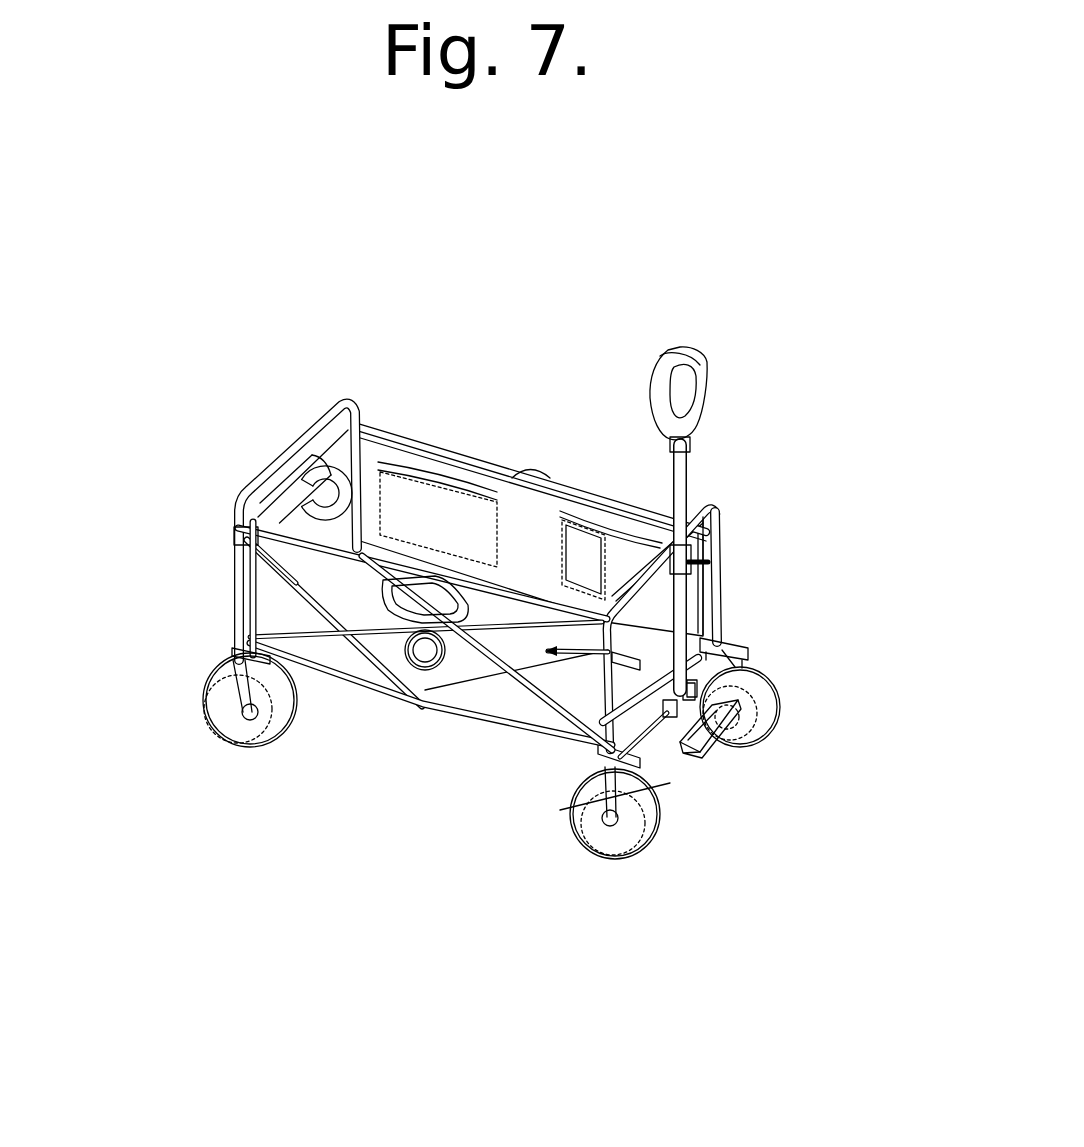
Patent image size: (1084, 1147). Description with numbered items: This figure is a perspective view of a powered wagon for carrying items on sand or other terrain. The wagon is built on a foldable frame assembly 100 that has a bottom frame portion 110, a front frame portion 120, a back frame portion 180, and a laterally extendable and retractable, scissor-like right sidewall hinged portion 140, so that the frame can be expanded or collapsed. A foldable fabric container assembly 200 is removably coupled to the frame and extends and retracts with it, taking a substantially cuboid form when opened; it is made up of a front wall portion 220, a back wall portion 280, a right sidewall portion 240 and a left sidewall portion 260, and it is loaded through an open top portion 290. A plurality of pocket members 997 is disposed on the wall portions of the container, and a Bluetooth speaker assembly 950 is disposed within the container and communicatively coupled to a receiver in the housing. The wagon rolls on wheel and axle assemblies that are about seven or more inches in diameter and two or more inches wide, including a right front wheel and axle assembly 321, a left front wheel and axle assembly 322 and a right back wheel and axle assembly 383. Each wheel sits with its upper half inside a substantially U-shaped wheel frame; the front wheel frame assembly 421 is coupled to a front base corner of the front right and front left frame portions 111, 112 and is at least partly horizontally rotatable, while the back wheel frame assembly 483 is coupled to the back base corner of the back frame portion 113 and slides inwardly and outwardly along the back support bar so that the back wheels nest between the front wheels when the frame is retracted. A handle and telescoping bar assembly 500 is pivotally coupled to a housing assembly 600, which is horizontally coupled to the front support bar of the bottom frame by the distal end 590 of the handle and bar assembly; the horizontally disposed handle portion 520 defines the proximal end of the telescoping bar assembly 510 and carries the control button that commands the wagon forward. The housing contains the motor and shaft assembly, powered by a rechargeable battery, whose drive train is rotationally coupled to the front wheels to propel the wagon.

The foldable frame assembly 100 is at (333, 377).
The bottom frame portion 110 is at (357, 710).
The front right portion of the foldable frame assembly 111 is at (567, 808).
The front left portion of the foldable frame assembly 112 is at (745, 626).
The back portion of the foldable frame assembly 113 is at (233, 658).
The front frame portion 120 is at (717, 570).
The right sidewall hinged portion 140 is at (502, 663).
The back frame portion 180 is at (237, 534).
The foldable fabric container assembly 200 is at (418, 410).
The front wall portion 220 is at (633, 665).
The right sidewall portion 240 is at (273, 607).
The left sidewall portion 260 is at (512, 477).
The back wall portion 280 is at (308, 440).
The open top portion 290 is at (454, 452).
The right front wheel and axle assembly 321 is at (620, 835).
The left front wheel and axle assembly 322 is at (752, 727).
The right back wheel and axle assembly 383 is at (217, 700).
The wheel frame assembly 421 is at (620, 837).
The wheel frame assembly 483 is at (240, 712).
The handle and telescoping bar assembly 500 is at (718, 465).
The telescoping bar assembly 510 is at (717, 403).
The handle portion 520 is at (710, 357).
The distal end of the handle and bar assembly 590 is at (697, 689).
The housing assembly 600 is at (670, 740).
The Bluetooth speaker assembly 950 is at (420, 668).
The pocket members 997 is at (583, 557).